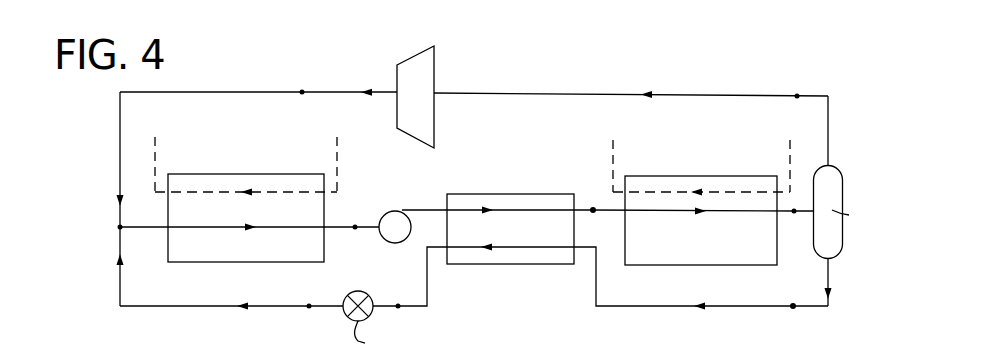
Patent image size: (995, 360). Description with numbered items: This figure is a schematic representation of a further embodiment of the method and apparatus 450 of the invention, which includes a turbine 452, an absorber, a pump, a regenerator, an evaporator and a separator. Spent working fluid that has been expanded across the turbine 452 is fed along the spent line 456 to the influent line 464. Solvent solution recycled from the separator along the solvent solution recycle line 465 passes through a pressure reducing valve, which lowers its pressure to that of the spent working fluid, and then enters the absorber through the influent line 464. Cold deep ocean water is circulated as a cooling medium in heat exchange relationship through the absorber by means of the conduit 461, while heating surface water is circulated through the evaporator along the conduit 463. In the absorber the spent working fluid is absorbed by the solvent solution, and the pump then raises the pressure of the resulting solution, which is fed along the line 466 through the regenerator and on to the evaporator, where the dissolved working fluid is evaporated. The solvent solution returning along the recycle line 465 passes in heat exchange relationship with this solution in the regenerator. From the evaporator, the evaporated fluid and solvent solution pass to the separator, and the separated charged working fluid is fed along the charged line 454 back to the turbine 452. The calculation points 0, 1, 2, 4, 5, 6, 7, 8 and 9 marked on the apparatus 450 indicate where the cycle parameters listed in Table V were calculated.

The apparatus 450 is at (599, 64).
The turbine 452 is at (432, 62).
The charged line 454 is at (686, 96).
The spent line 456 is at (221, 91).
The conduit 461 is at (337, 161).
The conduit 463 is at (790, 148).
The influent line 464 is at (147, 231).
The solvent solution recycle line 465 is at (633, 308).
The line 466 is at (427, 213).
The calculation point 0 is at (303, 91).
The calculation point 1 is at (116, 229).
The calculation point 2 is at (353, 233).
The calculation point 4 is at (594, 207).
The calculation point 5 is at (793, 215).
The calculation point 6 is at (799, 95).
The calculation point 7 is at (792, 311).
The calculation point 8 is at (397, 312).
The calculation point 9 is at (308, 312).